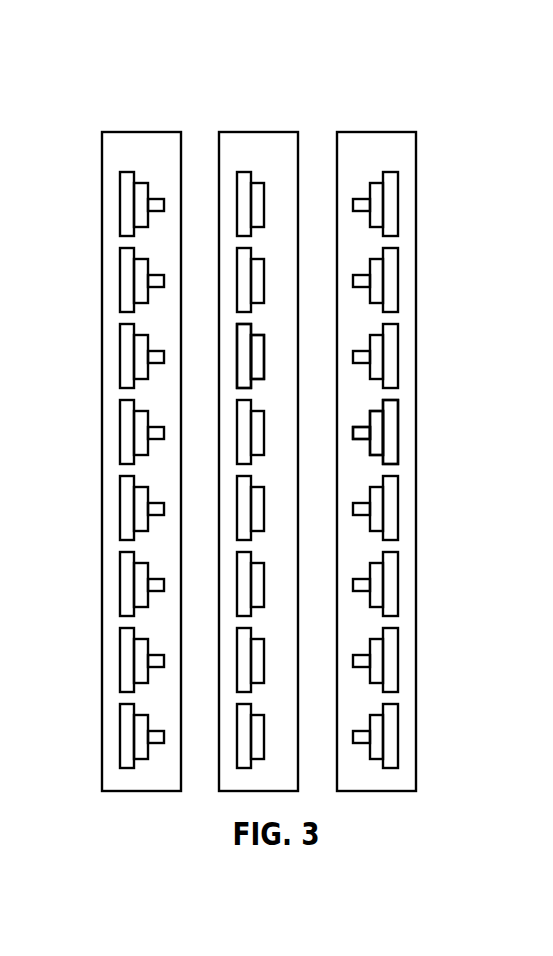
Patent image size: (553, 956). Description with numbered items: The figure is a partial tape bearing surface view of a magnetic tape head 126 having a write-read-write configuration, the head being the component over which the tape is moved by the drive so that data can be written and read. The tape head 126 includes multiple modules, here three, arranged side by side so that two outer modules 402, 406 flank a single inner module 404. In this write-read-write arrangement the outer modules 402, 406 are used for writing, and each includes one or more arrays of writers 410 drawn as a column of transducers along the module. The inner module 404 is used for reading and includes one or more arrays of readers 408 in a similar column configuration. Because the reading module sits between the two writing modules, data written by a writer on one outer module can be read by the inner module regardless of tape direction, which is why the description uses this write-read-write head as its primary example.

The tape head 126 is at (68, 102).
The outer module 402 is at (128, 112).
The inner module 404 is at (253, 112).
The outer module 406 is at (362, 112).
The reader 408 is at (264, 355).
The writer 410 is at (398, 430).